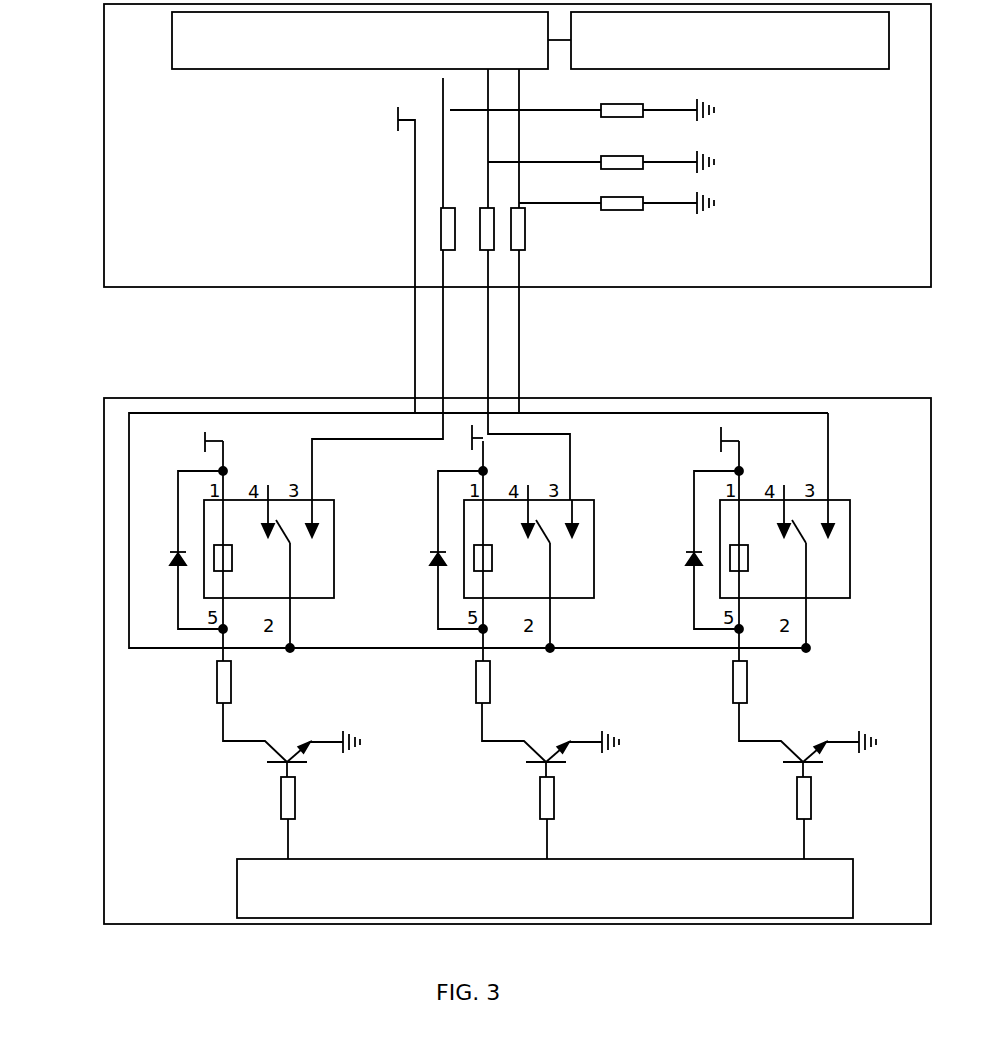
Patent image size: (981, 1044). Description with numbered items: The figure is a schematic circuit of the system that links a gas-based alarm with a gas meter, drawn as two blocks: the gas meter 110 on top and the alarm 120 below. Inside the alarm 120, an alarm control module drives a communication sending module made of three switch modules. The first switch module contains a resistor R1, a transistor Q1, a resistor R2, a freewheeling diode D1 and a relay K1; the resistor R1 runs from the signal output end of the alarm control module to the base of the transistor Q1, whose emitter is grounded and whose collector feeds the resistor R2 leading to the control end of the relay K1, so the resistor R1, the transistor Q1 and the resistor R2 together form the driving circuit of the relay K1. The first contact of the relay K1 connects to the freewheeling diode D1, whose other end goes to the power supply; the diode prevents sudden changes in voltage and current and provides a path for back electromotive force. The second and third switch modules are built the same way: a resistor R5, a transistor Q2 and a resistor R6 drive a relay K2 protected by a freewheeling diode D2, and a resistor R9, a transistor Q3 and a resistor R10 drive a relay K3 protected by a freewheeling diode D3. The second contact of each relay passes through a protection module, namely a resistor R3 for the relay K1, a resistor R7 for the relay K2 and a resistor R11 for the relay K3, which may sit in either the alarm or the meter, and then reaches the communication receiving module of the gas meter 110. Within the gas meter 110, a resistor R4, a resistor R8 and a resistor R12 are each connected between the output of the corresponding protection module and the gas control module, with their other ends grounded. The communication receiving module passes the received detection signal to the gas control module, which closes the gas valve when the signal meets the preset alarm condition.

The gas meter 110 is at (103, 203).
The alarm 120 is at (97, 557).
The relay K1 is at (285, 551).
The relay K2 is at (546, 551).
The relay K3 is at (800, 551).
The freewheeling diode D1 is at (183, 550).
The freewheeling diode D2 is at (441, 550).
The freewheeling diode D3 is at (697, 550).
The transistor Q1 is at (291, 740).
The transistor Q2 is at (550, 740).
The transistor Q3 is at (807, 734).
The resistor R1 is at (270, 818).
The resistor R2 is at (204, 682).
The resistor R3 is at (391, 289).
The resistor R4 is at (582, 117).
The resistor R5 is at (525, 818).
The resistor R6 is at (461, 682).
The resistor R7 is at (525, 284).
The resistor R8 is at (601, 166).
The resistor R9 is at (785, 818).
The resistor R10 is at (715, 682).
The resistor R11 is at (536, 241).
The resistor R12 is at (616, 212).